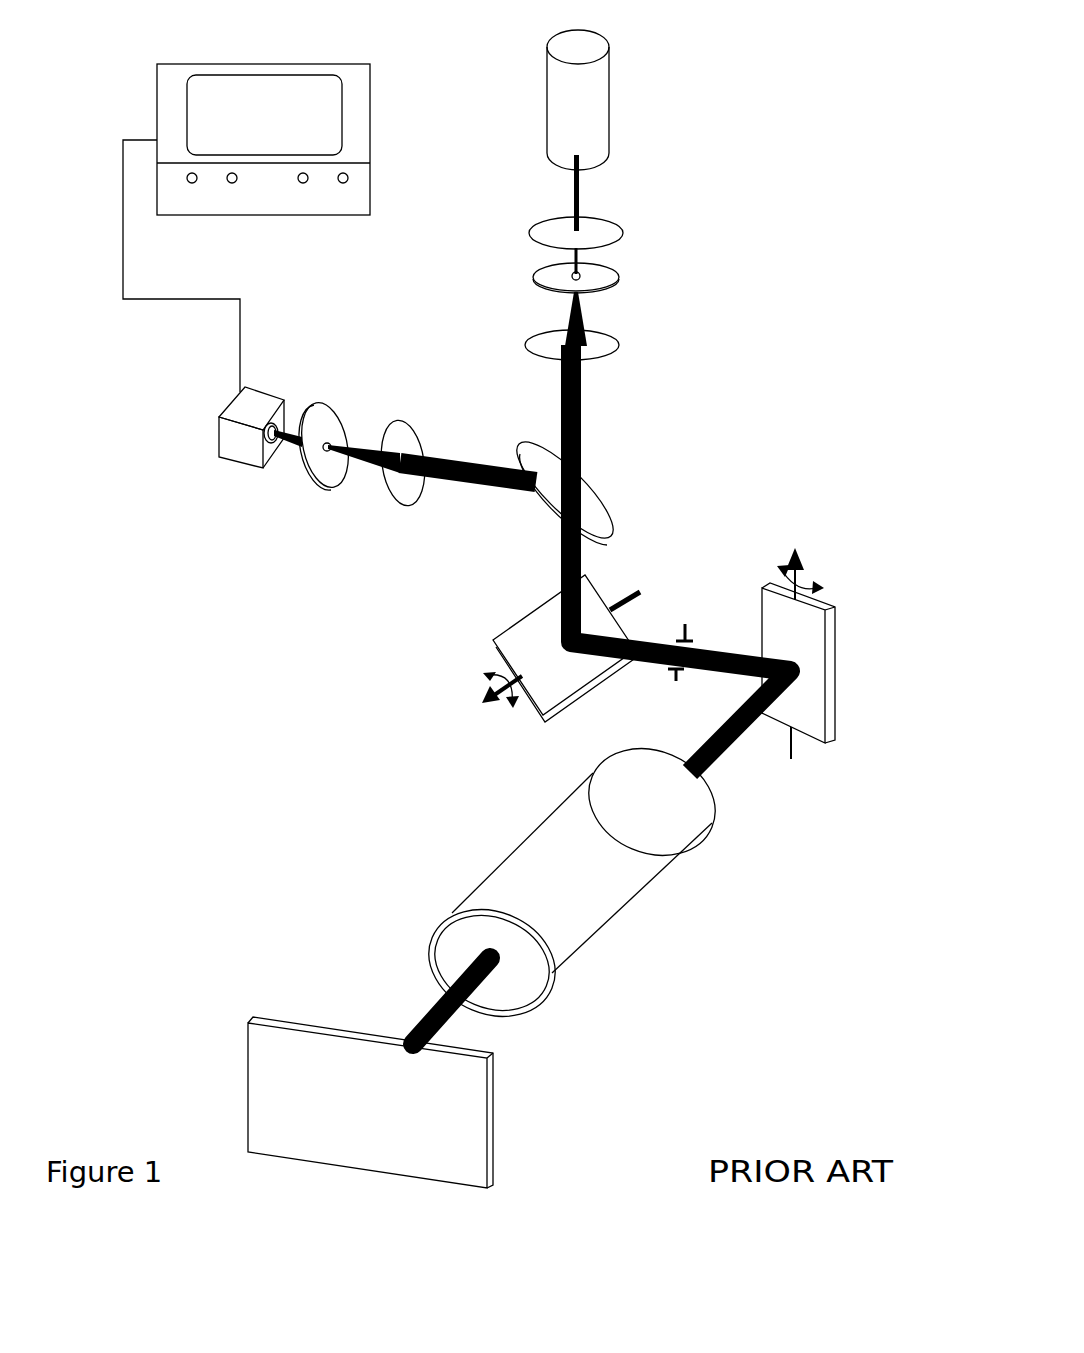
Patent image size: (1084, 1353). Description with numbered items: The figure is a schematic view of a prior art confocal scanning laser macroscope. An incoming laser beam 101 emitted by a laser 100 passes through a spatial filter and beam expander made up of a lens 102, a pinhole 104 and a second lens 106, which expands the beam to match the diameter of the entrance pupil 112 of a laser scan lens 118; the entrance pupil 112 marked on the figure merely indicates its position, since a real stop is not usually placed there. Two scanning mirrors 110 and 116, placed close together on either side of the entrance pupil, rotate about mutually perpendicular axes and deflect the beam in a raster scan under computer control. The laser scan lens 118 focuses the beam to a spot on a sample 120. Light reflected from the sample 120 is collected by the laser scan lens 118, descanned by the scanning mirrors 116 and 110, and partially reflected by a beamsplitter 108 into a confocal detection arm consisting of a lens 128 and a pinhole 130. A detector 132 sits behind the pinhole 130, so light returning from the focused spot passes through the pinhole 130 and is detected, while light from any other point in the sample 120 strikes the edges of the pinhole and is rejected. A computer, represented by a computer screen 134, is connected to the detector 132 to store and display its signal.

The laser 100 is at (612, 97).
The incoming laser beam 101 is at (582, 183).
The lens 102 is at (622, 231).
The pinhole 104 is at (618, 277).
The lens 106 is at (618, 343).
The beamsplitter 108 is at (607, 490).
The scanning mirror 110 is at (527, 616).
The entrance pupil 112 is at (686, 624).
The scanning mirror 116 is at (840, 668).
The laser scan lens 118 is at (635, 910).
The sample 120 is at (495, 1118).
The lens 128 is at (392, 504).
The pinhole 130 is at (318, 489).
The detector 132 is at (218, 455).
The computer screen 134 is at (157, 116).